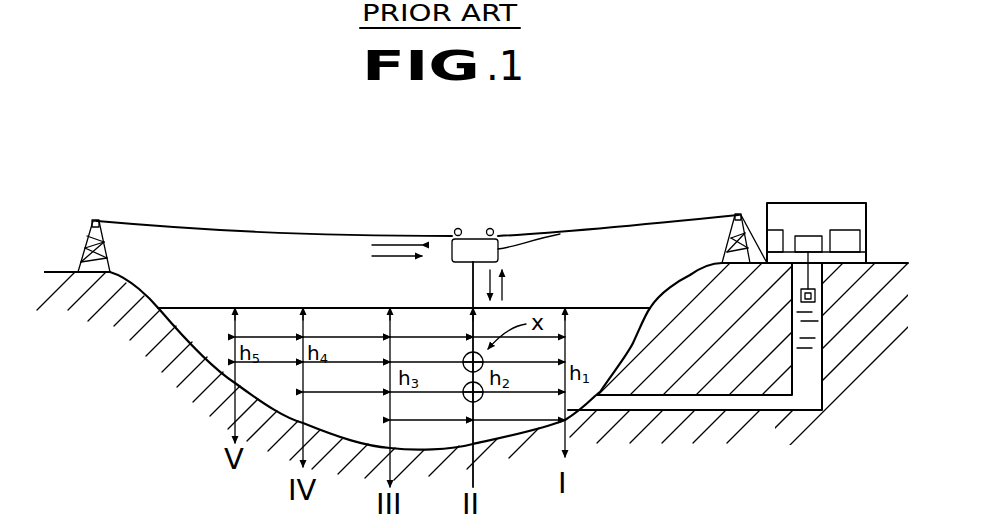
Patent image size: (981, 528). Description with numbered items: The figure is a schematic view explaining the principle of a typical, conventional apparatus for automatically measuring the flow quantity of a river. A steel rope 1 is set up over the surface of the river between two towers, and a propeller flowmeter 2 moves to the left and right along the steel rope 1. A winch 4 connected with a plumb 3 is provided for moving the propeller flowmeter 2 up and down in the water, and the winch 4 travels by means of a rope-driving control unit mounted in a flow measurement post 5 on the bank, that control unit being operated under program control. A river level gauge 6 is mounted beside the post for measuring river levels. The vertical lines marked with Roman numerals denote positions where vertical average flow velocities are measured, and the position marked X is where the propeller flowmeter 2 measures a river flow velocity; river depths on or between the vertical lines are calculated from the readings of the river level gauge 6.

The steel rope 1 is at (347, 236).
The propeller flowmeter 2 is at (463, 368).
The plumb 3 is at (473, 287).
The winch 4 is at (500, 235).
The flow measurement post 5 is at (838, 218).
The river level gauge 6 is at (815, 293).